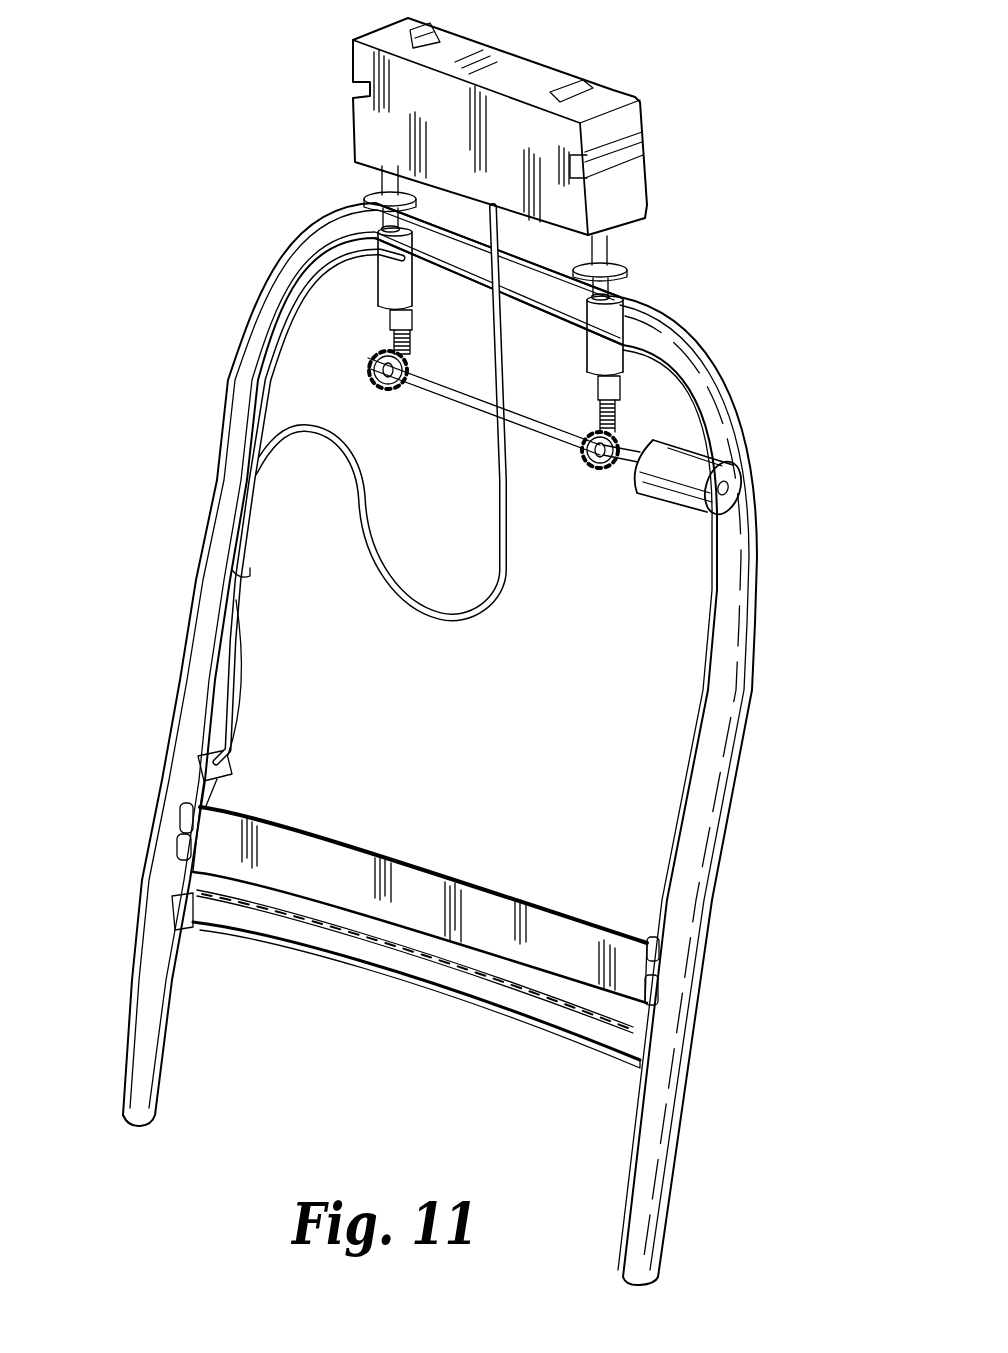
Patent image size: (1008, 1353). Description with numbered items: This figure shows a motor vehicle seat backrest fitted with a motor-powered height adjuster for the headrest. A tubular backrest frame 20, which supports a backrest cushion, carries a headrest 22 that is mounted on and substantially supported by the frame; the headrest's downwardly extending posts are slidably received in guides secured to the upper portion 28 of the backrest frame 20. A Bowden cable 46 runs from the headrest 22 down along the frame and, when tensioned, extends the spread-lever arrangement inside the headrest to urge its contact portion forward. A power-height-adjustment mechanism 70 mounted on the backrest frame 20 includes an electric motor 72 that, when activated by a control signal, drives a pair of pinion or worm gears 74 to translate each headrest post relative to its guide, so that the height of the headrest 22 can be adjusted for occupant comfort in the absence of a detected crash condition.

The backrest frame 20 is at (742, 728).
The headrest 22 is at (668, 180).
The upper portion 28 is at (655, 305).
The Bowden cable 46 is at (497, 587).
The power-height-adjustment mechanism 70 is at (778, 408).
The electric motor 72 is at (684, 505).
The pinion gear or worm gear 74 is at (372, 376).